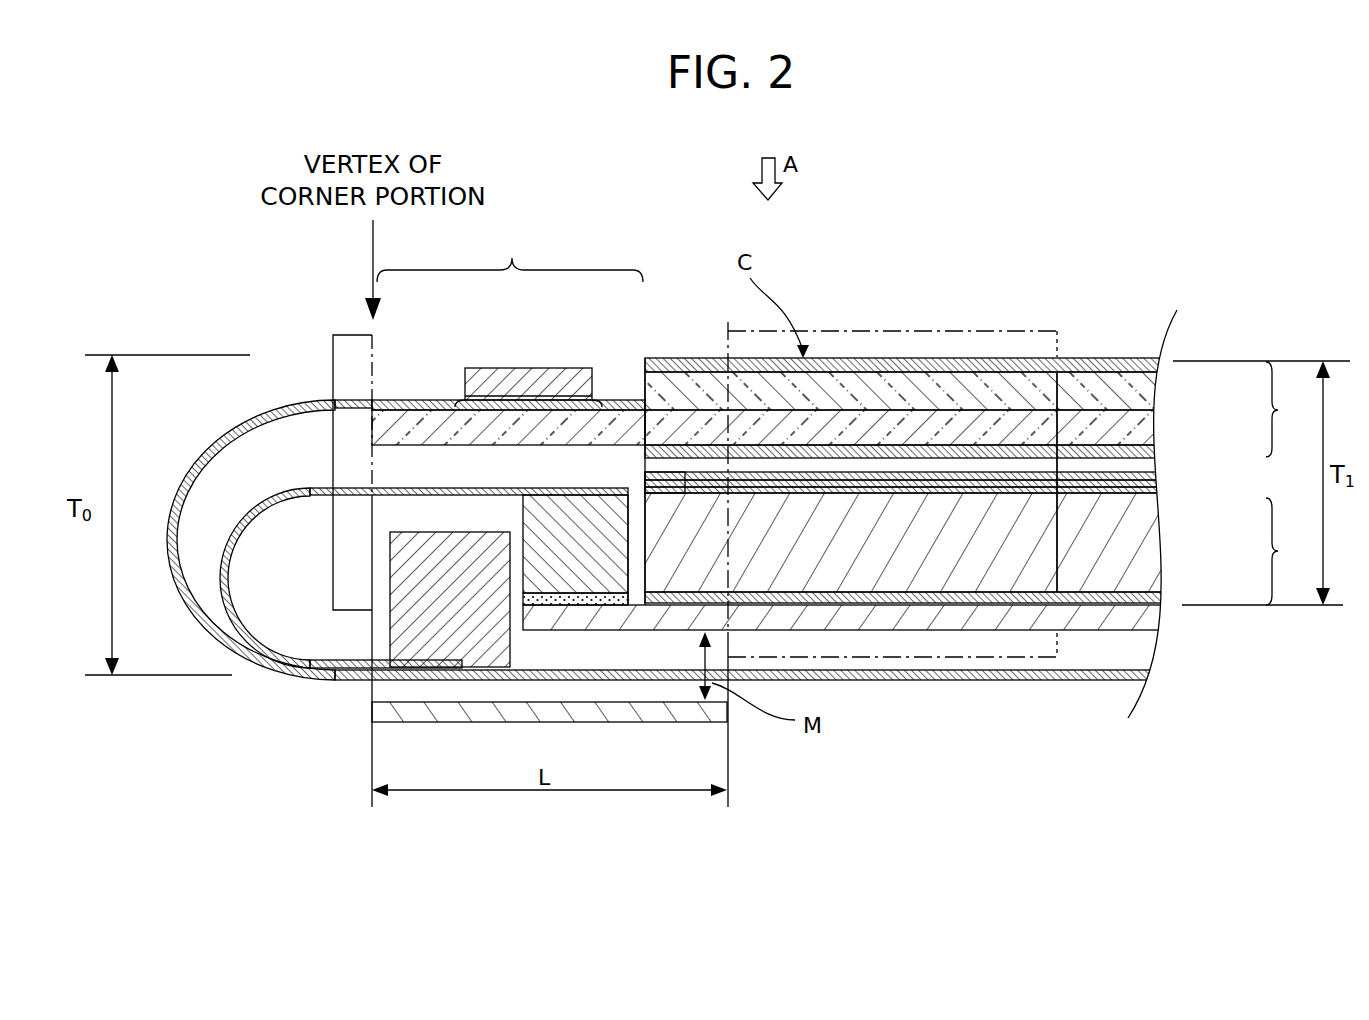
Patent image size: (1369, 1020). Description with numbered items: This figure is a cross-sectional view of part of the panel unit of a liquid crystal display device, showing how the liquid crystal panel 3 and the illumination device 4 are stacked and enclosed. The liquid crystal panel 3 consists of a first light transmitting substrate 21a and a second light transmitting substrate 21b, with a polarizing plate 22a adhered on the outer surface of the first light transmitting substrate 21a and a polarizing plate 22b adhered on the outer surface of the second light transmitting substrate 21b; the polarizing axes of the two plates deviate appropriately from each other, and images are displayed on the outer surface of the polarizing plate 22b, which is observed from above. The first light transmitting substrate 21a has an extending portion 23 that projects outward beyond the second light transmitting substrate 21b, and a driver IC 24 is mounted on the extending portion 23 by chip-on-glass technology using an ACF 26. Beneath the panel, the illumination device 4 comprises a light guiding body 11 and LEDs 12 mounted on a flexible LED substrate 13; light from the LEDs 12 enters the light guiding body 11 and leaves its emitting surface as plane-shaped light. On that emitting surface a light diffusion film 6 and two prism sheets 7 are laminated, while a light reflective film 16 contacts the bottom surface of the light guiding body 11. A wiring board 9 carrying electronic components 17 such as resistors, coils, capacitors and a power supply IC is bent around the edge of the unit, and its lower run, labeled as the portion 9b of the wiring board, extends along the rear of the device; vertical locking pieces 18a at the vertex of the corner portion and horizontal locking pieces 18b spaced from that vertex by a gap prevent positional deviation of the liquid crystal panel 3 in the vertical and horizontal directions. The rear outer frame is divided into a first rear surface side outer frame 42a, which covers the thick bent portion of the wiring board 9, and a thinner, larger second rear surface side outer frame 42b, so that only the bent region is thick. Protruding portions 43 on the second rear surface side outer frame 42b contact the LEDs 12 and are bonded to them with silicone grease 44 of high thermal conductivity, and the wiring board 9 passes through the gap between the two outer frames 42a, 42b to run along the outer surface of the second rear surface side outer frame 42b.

The liquid crystal panel 3 is at (1281, 409).
The illumination device 4 is at (1281, 551).
The light diffusion film 6 is at (643, 487).
The prism sheets 7 is at (1150, 483).
The wiring board 9 is at (205, 435).
The bezel bottom portion 9b is at (1040, 680).
The light guiding body 11 is at (1150, 540).
The LEDs 12 is at (562, 512).
The LED substrate 13 is at (258, 500).
The light reflective film 16 is at (868, 600).
The electronic components 17 is at (422, 532).
The vertical locking pieces 18a is at (345, 333).
The horizontal locking pieces 18b is at (922, 331).
The first light transmitting substrate 21a is at (1143, 430).
The second light transmitting substrate 21b is at (1150, 397).
The polarizing plate 22a is at (1145, 452).
The polarizing plate 22b is at (1105, 358).
The extending portion 23 is at (510, 256).
The driver IC 24 is at (535, 368).
The ACF (anisotropic conductive film) 26 is at (458, 400).
The first rear surface side outer frame 42a is at (612, 722).
The second rear surface side outer frame 42b is at (1107, 622).
The protruding portions 43 is at (600, 617).
The silicone grease 44 is at (565, 603).